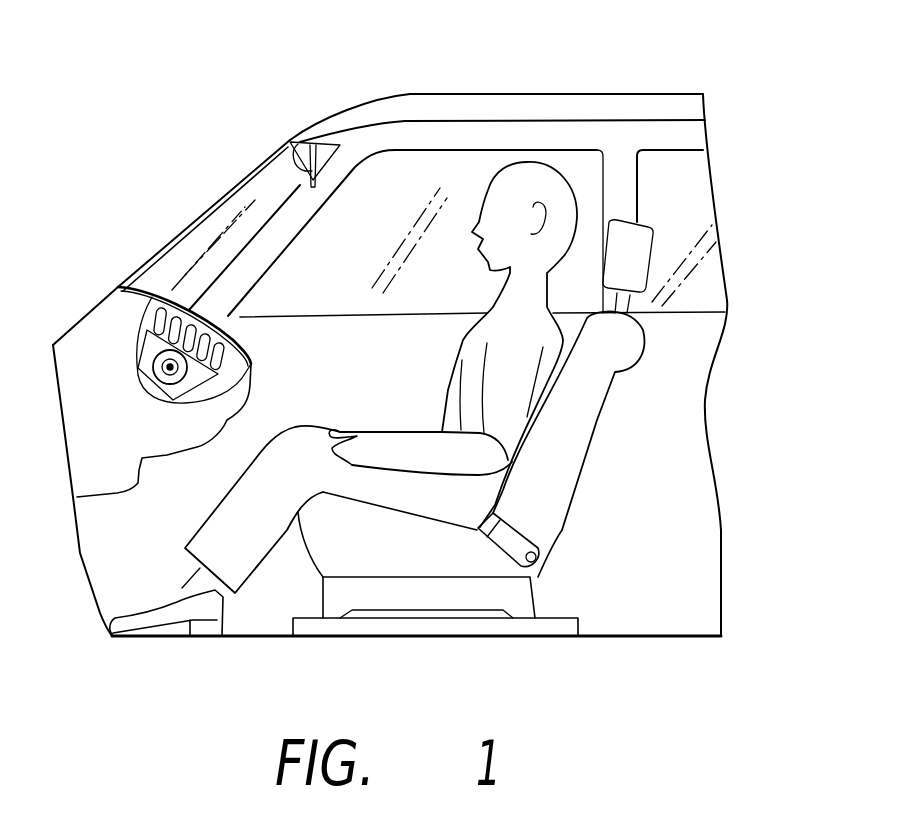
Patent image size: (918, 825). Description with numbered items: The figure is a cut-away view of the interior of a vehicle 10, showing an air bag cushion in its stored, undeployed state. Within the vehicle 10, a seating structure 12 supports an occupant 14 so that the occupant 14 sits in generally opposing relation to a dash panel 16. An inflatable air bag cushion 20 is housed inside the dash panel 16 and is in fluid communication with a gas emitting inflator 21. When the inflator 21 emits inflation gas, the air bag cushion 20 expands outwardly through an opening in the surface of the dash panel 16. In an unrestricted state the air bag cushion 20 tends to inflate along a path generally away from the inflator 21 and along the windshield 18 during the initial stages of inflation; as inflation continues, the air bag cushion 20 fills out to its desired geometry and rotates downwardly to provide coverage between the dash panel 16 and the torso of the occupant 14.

The vehicle 10 is at (752, 90).
The seating structure 12 is at (598, 418).
The occupant 14 is at (527, 162).
The dash panel 16 is at (236, 322).
The windshield 18 is at (220, 217).
The air bag cushion 20 is at (160, 333).
The inflator 21 is at (153, 367).